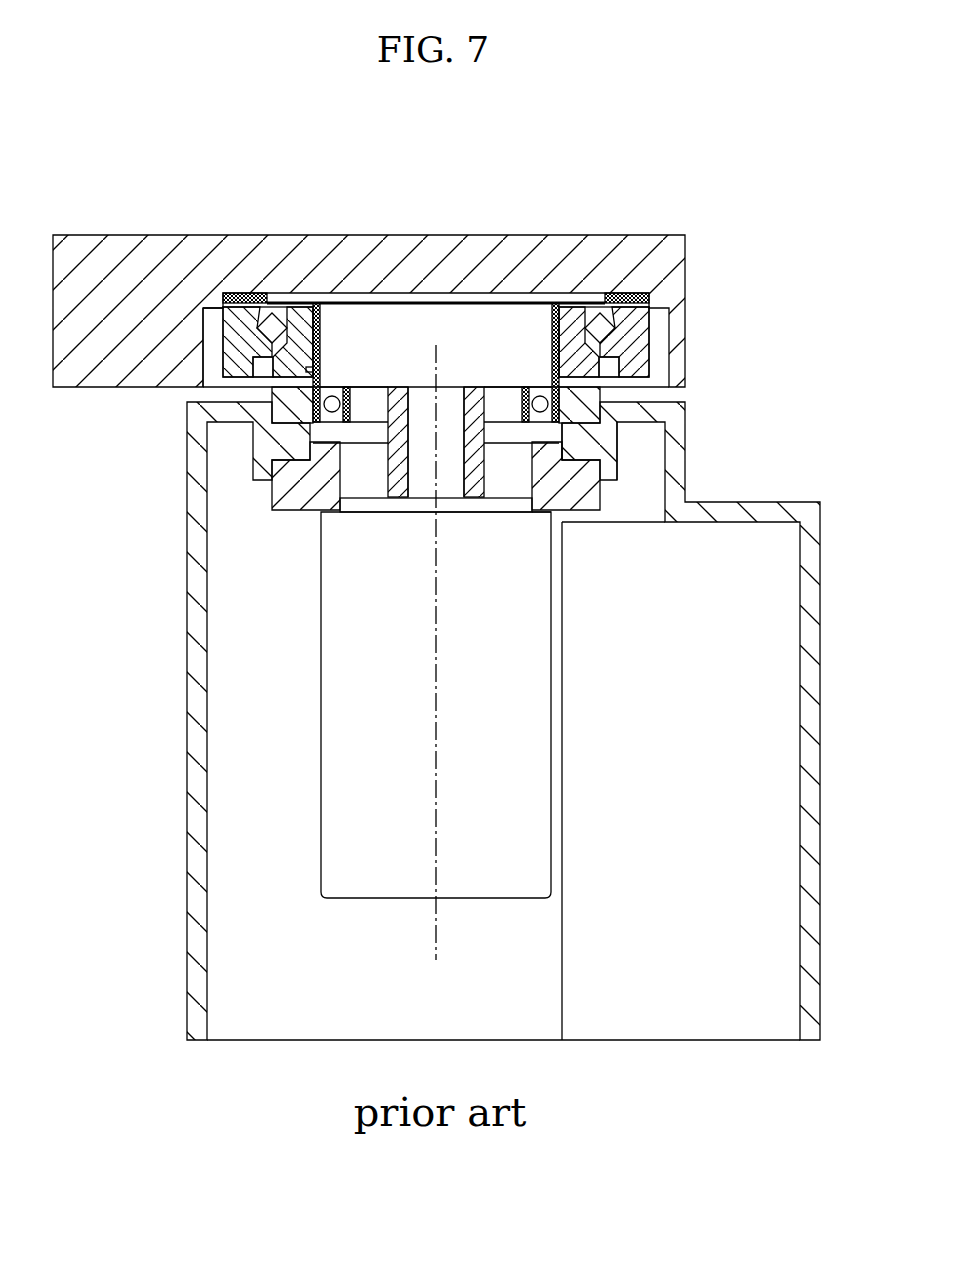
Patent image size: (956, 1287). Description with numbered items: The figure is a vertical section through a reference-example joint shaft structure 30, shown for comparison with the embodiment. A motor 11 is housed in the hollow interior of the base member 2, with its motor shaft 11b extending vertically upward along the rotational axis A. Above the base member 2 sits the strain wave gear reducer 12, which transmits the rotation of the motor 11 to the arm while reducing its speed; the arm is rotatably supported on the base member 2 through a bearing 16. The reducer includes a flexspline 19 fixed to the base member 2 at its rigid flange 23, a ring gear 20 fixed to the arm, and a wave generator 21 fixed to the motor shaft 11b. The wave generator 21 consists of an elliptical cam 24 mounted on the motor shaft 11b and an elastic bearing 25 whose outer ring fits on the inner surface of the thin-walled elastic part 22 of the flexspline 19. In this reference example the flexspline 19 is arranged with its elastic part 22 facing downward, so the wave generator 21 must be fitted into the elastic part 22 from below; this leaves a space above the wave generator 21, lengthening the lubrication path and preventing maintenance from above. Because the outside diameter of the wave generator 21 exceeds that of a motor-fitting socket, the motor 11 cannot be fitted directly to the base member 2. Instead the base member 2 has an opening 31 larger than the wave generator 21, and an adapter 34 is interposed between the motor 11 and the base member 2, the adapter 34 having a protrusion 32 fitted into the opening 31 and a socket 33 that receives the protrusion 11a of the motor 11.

The joint shaft structure 30 is at (763, 184).
The base member 2 is at (182, 713).
The motor 11 is at (316, 781).
The protrusion 11a is at (543, 513).
The motor shaft 11b is at (488, 495).
The strain wave gear reducer 12 is at (216, 368).
The bearing 16 is at (220, 330).
The flexspline 19 is at (326, 354).
The ring gear 20 is at (303, 400).
The wave generator 21 is at (472, 378).
The elastic part 22 is at (321, 318).
The flange 23 is at (225, 306).
The elliptical cam 24 is at (387, 492).
The elastic bearing 25 is at (336, 418).
The opening 31 is at (553, 448).
The protrusion 32 is at (560, 444).
The socket 33 is at (527, 460).
The adapter 34 is at (569, 519).
The rotational axis A is at (442, 847).